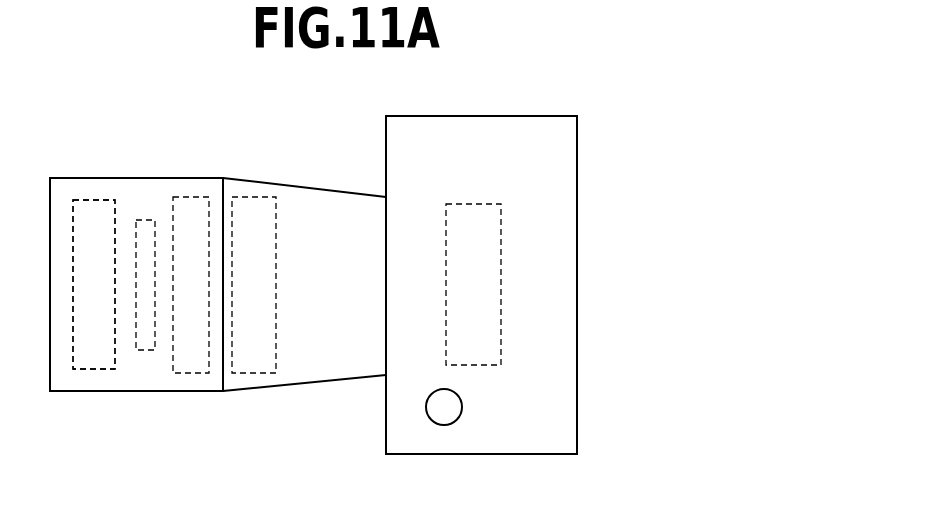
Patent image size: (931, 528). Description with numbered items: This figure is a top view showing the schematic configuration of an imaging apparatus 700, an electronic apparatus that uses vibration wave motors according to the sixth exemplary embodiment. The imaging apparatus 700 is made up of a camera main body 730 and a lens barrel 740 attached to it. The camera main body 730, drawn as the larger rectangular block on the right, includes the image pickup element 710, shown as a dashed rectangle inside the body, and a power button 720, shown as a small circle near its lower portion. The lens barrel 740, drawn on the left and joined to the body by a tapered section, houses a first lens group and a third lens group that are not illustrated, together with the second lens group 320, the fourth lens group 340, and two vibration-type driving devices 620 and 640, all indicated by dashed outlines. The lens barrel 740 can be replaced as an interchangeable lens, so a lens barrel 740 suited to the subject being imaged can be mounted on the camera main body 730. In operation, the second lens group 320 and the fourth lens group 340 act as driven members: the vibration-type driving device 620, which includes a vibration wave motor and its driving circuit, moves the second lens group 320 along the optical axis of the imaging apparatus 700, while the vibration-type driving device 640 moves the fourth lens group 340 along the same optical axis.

The imaging apparatus 700 is at (367, 97).
The image pickup element 710 is at (487, 285).
The power button 720 is at (443, 417).
The camera main body 730 is at (525, 447).
The lens barrel 740 is at (122, 188).
The second lens group 320 is at (95, 360).
The fourth lens group 340 is at (142, 340).
The vibration-type driving device 620 is at (190, 207).
The vibration-type driving device 640 is at (257, 207).